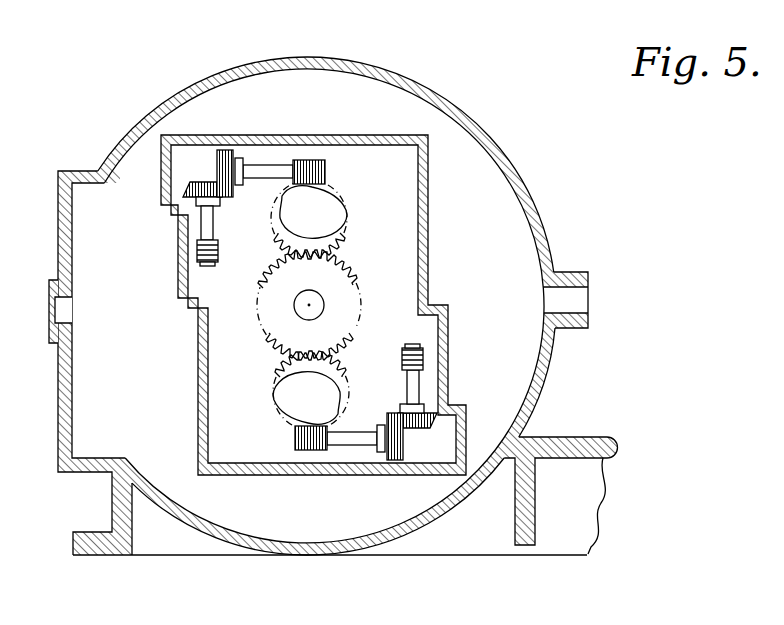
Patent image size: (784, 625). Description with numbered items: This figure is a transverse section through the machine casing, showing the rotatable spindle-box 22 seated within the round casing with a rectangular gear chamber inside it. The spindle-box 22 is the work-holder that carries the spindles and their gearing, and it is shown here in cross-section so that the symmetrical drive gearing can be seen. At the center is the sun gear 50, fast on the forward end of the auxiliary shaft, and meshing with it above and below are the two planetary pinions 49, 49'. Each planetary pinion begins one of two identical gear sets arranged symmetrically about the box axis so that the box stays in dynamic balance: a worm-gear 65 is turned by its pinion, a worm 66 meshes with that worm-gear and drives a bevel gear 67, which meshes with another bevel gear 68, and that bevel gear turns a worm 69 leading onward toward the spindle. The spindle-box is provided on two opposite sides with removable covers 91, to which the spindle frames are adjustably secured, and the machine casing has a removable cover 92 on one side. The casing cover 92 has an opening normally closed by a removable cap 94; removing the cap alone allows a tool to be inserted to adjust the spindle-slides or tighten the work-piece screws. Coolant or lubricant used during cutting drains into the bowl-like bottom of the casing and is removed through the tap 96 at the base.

The spindle-box 22 is at (418, 221).
The planetary pinion 49 is at (325, 219).
The planetary pinion 49' is at (327, 390).
The sun gear 50 is at (361, 291).
The worm-gear 65 is at (330, 197).
The worm 66 is at (326, 171).
The bevel gear 67 is at (231, 161).
The bevel gear 68 is at (197, 186).
The worm 69 is at (218, 243).
The spindle-box cover 91 is at (313, 304).
The casing cover 92 is at (58, 380).
The cap 94 is at (49, 313).
The tap 96 is at (313, 545).